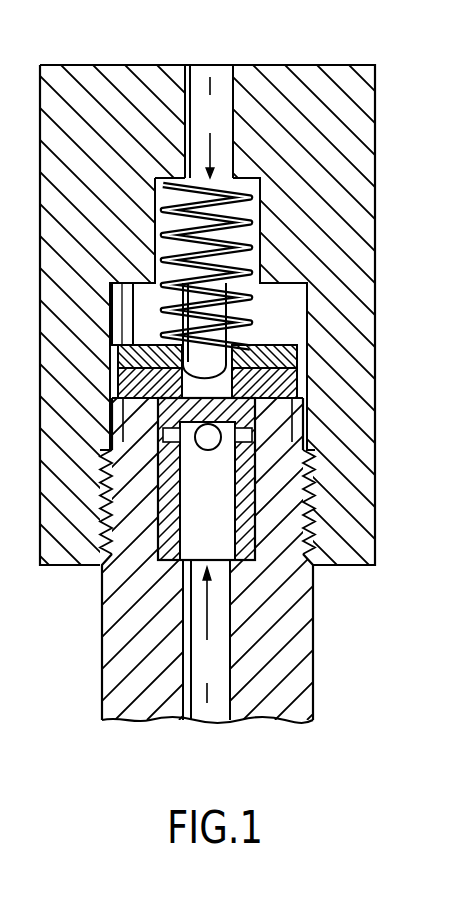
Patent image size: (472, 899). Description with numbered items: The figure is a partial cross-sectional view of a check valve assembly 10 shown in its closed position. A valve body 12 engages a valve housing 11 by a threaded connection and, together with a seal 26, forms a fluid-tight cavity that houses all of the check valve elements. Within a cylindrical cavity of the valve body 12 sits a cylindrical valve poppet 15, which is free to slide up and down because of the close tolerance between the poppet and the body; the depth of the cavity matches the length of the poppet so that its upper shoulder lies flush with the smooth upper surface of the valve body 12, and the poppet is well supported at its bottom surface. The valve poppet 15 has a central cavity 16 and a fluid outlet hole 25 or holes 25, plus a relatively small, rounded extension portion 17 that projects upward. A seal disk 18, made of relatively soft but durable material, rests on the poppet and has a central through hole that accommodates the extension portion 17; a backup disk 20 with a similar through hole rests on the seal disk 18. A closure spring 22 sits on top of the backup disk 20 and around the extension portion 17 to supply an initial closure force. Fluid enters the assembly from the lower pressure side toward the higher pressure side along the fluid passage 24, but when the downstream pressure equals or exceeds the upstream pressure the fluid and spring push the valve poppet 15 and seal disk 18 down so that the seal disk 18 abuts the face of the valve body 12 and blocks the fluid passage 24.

The check valve assembly 10 is at (376, 60).
The valve housing 11 is at (348, 138).
The valve body 12 is at (285, 647).
The valve poppet 15 is at (157, 525).
The central cavity 16 is at (180, 570).
The extension portion 17 is at (250, 305).
The seal disk 18 is at (300, 387).
The backup disk 20 is at (305, 347).
The closure spring 22 is at (260, 202).
The fluid passage 24 is at (188, 157).
The fluid outlet hole 25 is at (157, 450).
The seal 26 is at (305, 434).